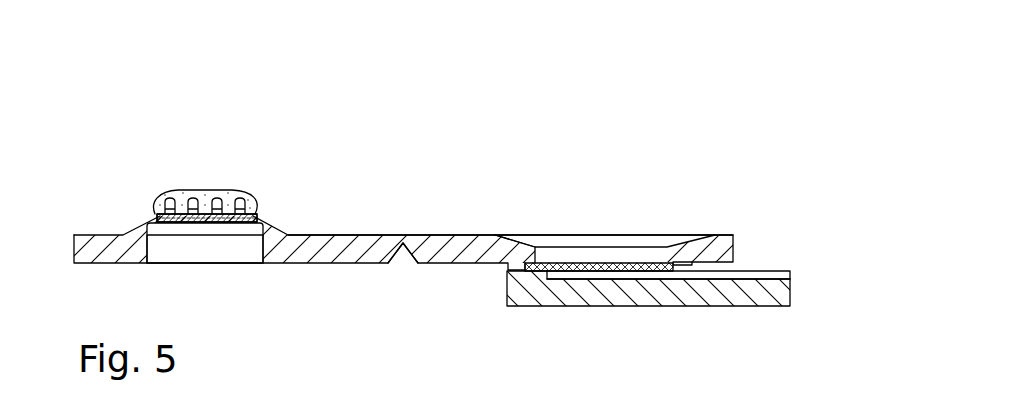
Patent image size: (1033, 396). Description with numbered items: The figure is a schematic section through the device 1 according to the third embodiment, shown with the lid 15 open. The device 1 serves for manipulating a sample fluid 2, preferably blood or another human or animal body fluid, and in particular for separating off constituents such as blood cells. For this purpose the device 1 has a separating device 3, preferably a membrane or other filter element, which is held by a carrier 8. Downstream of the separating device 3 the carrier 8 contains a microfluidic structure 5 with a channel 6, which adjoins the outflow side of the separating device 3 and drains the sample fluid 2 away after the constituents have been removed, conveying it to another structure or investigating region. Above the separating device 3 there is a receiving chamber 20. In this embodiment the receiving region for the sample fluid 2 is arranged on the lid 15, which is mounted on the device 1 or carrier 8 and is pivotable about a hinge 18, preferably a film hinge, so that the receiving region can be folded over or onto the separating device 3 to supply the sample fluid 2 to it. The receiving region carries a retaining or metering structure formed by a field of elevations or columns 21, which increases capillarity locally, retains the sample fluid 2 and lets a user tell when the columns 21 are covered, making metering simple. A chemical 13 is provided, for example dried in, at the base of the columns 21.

The device 1 is at (115, 149).
The sample fluid 2 is at (157, 200).
The elevations or columns 21 is at (197, 192).
The chemical 13 is at (158, 217).
The lid 15 is at (322, 242).
The carrier 8 is at (458, 236).
The receiving chamber 20 is at (568, 236).
The hinge 18 is at (401, 266).
The separating device 3 is at (540, 275).
The microfluidic structure 5 is at (615, 287).
The channel 6 is at (765, 274).